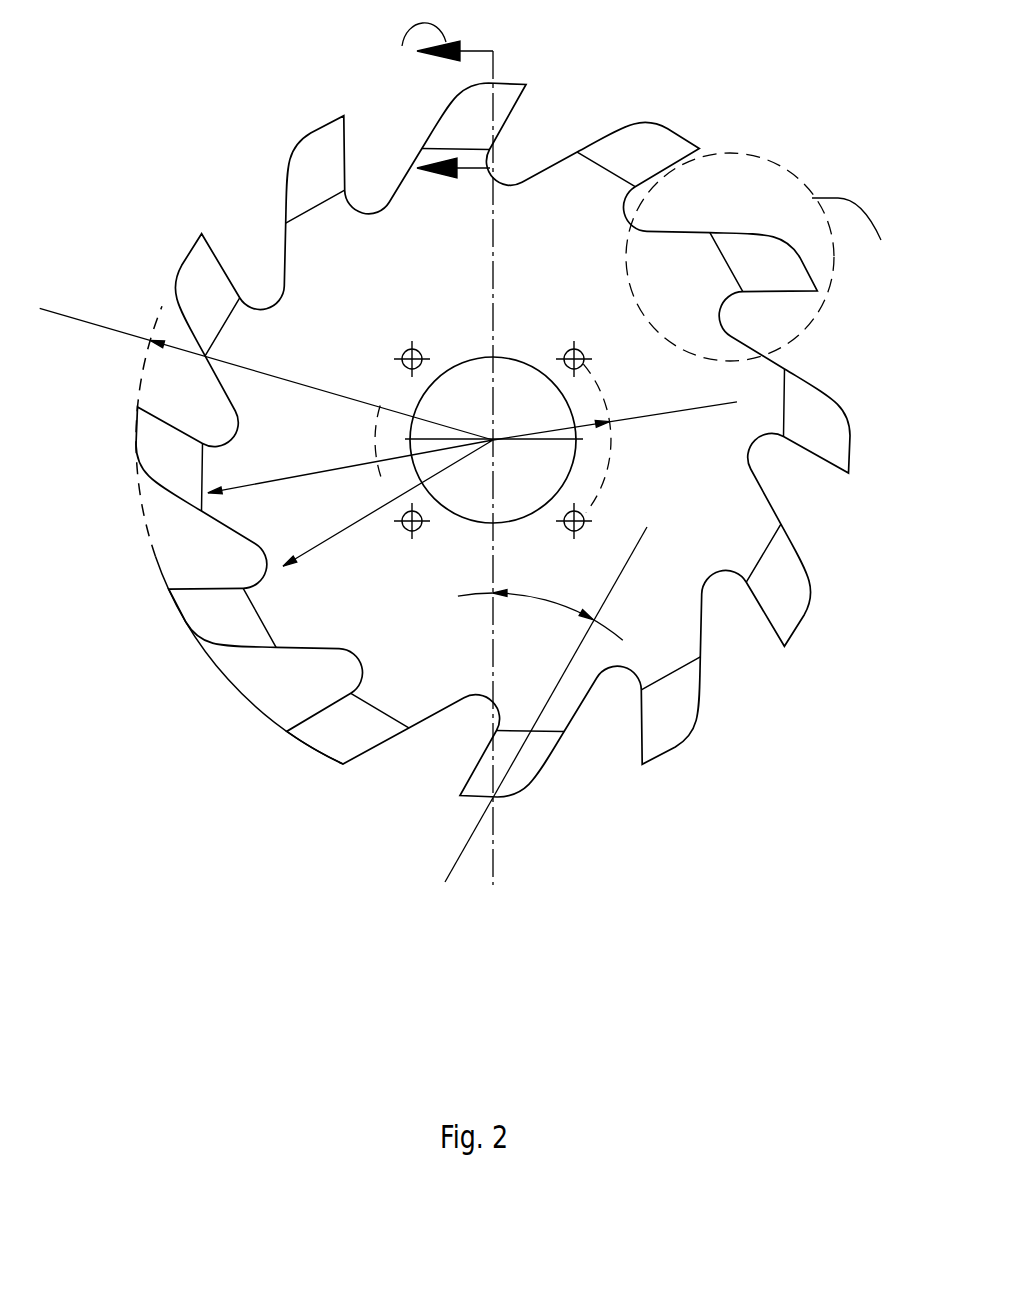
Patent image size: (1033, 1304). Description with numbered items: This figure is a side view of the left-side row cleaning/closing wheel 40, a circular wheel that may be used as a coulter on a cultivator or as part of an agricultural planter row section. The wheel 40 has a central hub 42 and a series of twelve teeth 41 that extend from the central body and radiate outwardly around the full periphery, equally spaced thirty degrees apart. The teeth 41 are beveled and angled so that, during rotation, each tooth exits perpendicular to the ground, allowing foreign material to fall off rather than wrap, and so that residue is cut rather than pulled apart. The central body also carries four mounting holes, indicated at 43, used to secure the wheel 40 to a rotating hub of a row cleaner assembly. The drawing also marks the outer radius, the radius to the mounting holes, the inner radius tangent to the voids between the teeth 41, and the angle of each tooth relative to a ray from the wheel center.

The left-side cleaning/closing wheel 40 is at (489, 454).
The teeth 41 is at (675, 130).
The central hub 42 is at (510, 525).
The mounting holes 43 is at (311, 321).